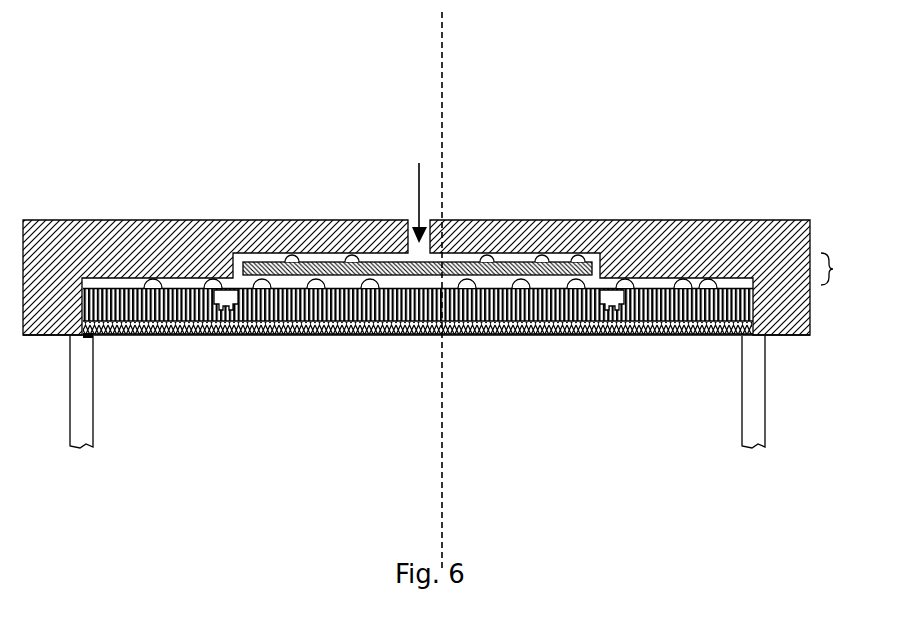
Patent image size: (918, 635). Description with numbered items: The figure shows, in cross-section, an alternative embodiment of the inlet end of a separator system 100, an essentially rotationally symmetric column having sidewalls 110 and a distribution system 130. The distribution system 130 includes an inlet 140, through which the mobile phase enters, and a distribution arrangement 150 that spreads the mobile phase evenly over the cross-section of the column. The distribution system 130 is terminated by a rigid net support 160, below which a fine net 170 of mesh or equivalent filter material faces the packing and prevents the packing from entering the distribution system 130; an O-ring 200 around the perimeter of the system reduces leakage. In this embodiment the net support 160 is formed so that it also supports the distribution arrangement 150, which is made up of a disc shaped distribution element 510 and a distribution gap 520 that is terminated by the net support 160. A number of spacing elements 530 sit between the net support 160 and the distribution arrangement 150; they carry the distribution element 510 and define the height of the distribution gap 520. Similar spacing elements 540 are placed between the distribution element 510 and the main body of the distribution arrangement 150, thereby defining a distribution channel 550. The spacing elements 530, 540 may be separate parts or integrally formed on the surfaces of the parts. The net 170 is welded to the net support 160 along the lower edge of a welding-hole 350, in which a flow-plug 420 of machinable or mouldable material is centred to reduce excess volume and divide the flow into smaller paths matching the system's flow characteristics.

The separator system 100 is at (79, 67).
The sidewalls 110 is at (75, 408).
The distribution system 130 is at (195, 168).
The inlet 140 is at (435, 203).
The distribution arrangement 150 is at (845, 269).
The net support 160 is at (486, 336).
The net 170 is at (382, 336).
The O-ring 200 is at (93, 337).
The welding-hole 350 is at (619, 333).
The flow-plug 420 is at (612, 300).
The distribution element 510 is at (585, 257).
The distribution gap 520 is at (710, 277).
The spacing elements 530 is at (152, 286).
The spacing elements 540 is at (294, 256).
The distribution channel 550 is at (535, 256).